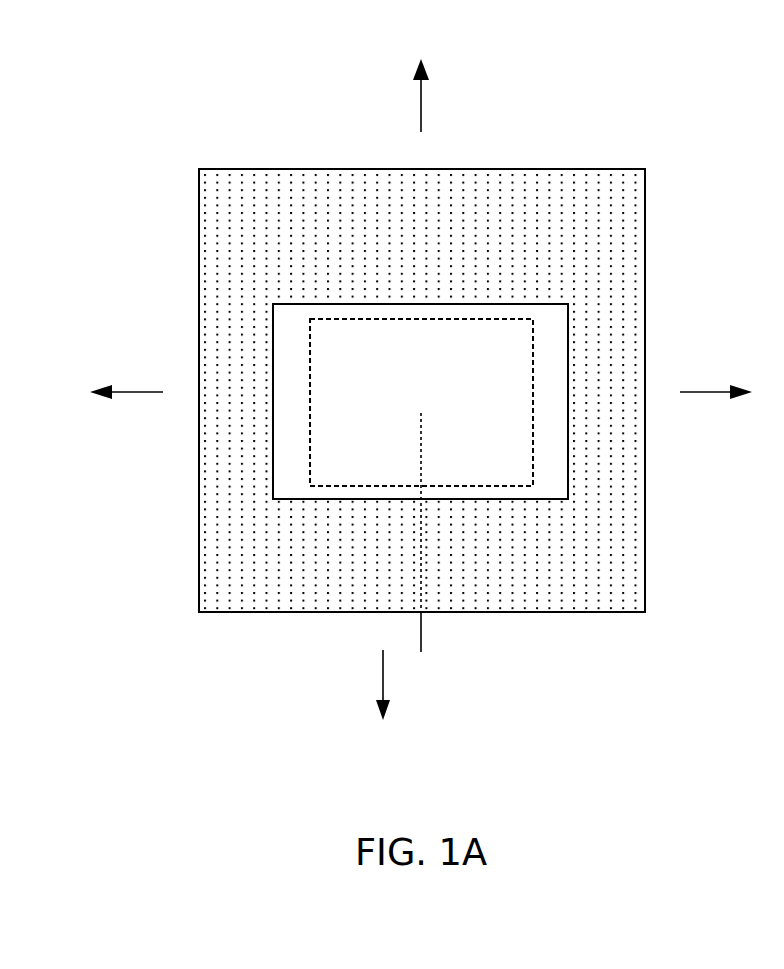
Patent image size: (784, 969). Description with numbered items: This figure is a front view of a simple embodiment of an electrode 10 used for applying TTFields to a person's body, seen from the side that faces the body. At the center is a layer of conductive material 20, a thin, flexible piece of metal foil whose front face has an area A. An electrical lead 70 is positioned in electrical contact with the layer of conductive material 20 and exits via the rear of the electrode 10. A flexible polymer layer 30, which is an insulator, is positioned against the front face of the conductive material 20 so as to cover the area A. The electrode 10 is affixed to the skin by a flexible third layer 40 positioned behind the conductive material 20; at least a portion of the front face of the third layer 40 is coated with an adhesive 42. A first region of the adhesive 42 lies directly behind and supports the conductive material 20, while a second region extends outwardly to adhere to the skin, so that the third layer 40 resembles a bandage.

The electrode 10 is at (418, 391).
The layer of conductive material 20 is at (420, 318).
The flexible polymer layer 30 is at (422, 303).
The flexible third layer 40 is at (478, 168).
The adhesive 42 is at (513, 198).
The electrical lead 70 is at (422, 632).